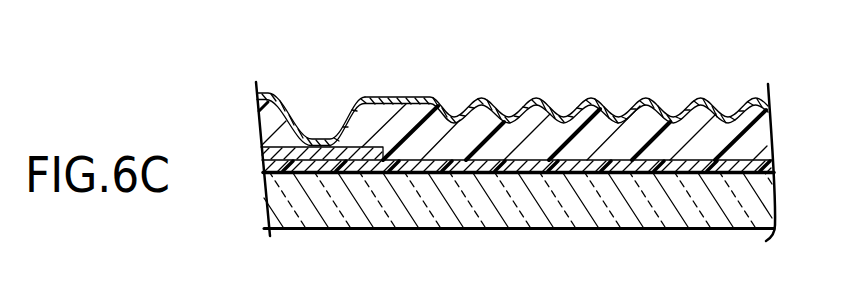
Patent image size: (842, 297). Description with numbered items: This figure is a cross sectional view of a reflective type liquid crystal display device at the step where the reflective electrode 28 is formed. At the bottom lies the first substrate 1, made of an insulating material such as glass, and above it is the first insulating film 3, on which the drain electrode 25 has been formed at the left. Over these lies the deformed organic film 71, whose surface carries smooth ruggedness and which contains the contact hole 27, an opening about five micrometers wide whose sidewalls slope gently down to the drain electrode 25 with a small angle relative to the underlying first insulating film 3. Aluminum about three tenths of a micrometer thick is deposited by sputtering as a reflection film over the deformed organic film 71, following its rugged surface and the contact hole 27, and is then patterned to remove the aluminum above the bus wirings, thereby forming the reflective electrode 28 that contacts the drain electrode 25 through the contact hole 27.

The first substrate 1 is at (713, 215).
The first insulating film 3 is at (588, 172).
The drain electrode 25 is at (329, 153).
The contact hole 27 is at (322, 130).
The reflective electrode 28 is at (413, 100).
The deformed organic film 71 is at (600, 128).